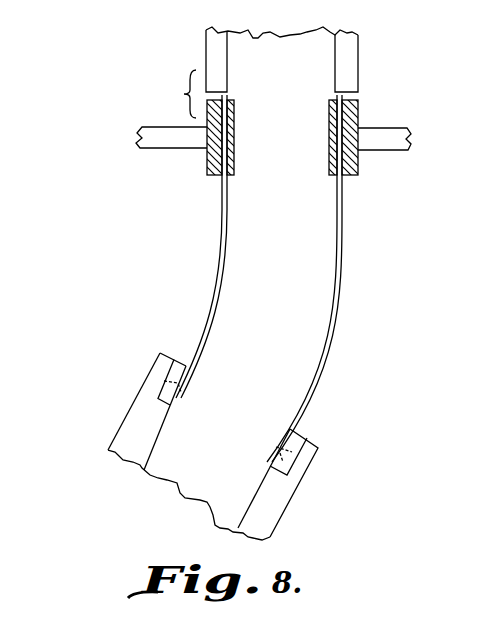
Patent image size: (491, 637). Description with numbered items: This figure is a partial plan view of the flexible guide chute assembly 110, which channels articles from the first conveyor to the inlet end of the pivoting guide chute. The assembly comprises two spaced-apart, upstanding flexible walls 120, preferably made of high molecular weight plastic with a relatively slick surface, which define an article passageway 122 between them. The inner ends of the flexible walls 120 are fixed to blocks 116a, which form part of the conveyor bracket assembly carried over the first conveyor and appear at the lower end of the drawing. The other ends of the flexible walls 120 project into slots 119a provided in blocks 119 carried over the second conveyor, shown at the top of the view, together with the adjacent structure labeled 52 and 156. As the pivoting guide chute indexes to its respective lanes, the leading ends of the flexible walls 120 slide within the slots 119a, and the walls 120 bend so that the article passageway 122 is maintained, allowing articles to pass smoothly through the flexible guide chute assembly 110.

The upper tube section 52 is at (263, 56).
The tube wall 156 is at (376, 46).
The flexible guide chute assembly 110 is at (354, 273).
The blocks 119 is at (207, 123).
The slots 119a is at (343, 133).
The flexible walls 120 is at (212, 297).
The article passageway 122 is at (292, 294).
The blocks 116a is at (278, 498).